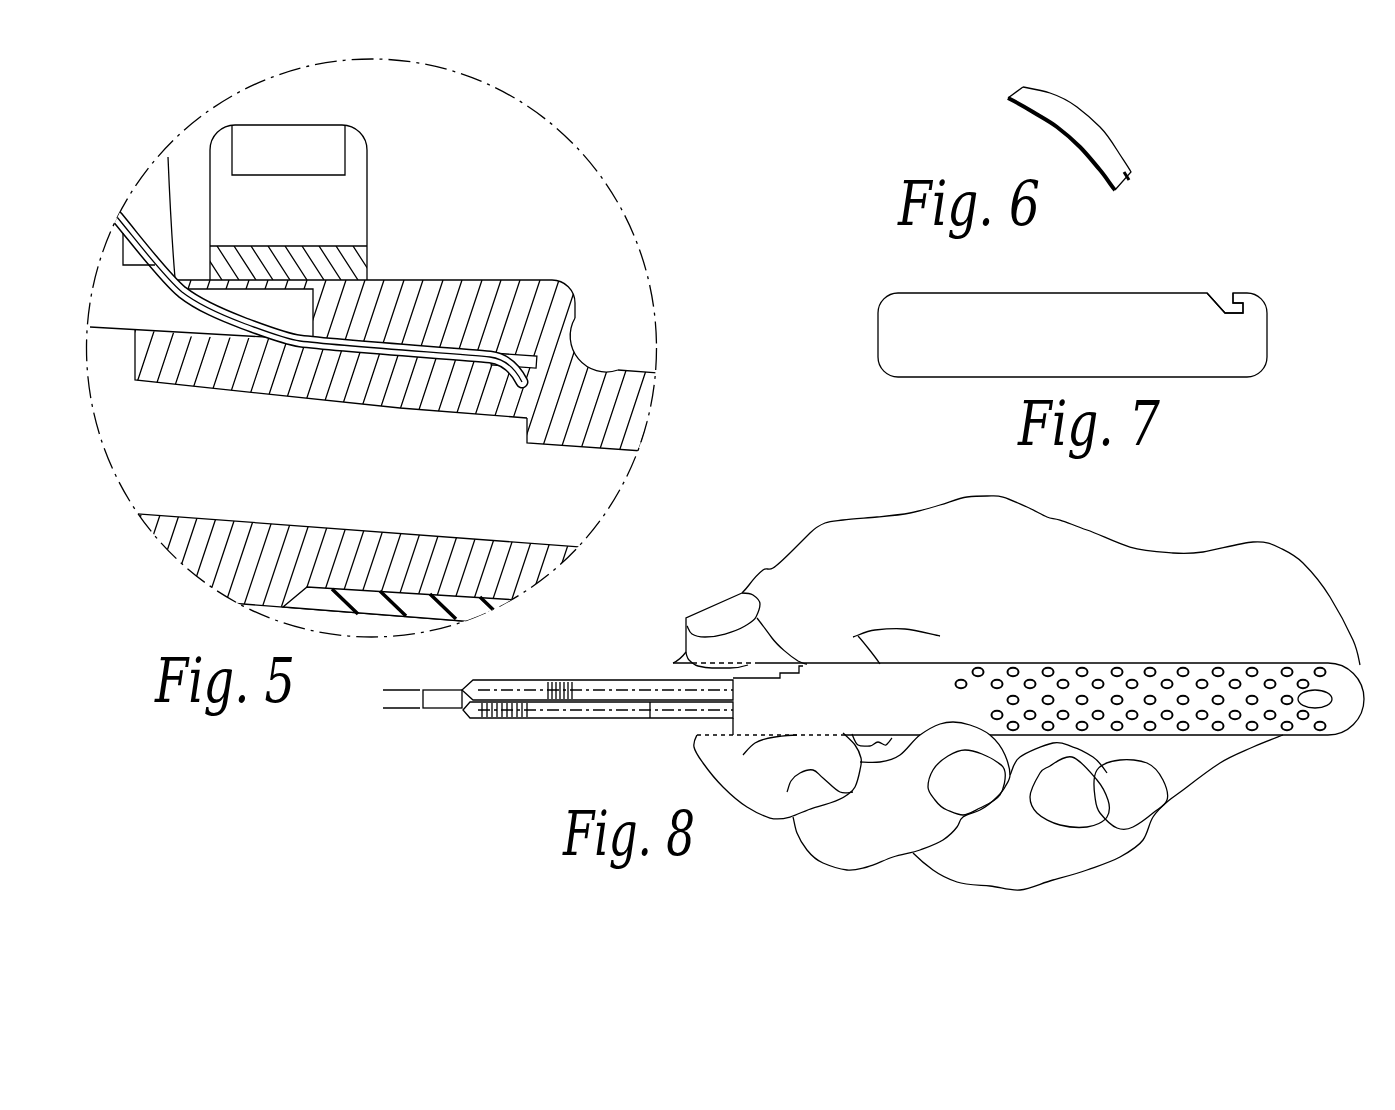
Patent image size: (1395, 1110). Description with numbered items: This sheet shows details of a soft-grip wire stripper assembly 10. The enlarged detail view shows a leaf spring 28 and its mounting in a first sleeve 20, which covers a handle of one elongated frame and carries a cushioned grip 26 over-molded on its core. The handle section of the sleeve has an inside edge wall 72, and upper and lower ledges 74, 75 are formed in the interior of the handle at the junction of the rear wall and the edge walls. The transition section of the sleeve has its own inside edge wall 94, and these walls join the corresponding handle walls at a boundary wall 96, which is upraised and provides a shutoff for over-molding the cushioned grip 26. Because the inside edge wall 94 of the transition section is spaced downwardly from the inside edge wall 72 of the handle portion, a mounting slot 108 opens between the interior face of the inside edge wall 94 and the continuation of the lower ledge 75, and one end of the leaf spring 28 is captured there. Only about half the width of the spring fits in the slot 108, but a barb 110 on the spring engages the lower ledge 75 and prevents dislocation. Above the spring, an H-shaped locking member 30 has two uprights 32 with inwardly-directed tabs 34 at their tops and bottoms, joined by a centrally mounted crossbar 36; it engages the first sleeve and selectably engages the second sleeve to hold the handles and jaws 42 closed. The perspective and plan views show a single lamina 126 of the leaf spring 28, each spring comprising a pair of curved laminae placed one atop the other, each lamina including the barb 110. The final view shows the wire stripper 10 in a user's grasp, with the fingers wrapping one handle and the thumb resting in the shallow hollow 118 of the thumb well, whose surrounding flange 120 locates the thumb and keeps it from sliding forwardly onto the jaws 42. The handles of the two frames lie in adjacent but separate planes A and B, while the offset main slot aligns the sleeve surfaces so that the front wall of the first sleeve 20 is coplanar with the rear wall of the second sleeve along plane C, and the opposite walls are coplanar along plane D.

In FIG. 8, the soft-grip wire stripper assembly 10 is at (642, 722).
In FIG. 5, the first sleeve 20 is at (640, 362).
In FIG. 5, the cushioned grip 26 is at (370, 607).
In FIG. 8, the cushioned grip 26 is at (1267, 722).
In FIG. 5, the leaf spring 28 is at (192, 305).
In FIG. 5, the H-shaped locking member 30 is at (372, 213).
In FIG. 5, the upright 32 is at (358, 180).
In FIG. 5, the tab 34 is at (322, 157).
In FIG. 5, the crossbar 36 is at (372, 262).
In FIG. 8, the jaws 42 is at (515, 680).
In FIG. 5, the inside edge wall 72 is at (617, 370).
In FIG. 5, the upper ledge 74 is at (313, 537).
In FIG. 5, the lower ledge 75 is at (365, 388).
In FIG. 5, the inside edge wall of transition section 94 is at (508, 280).
In FIG. 5, the boundary wall 96 is at (585, 320).
In FIG. 5, the mounting slot 108 is at (528, 352).
In FIG. 5, the barb 110 is at (478, 407).
In FIG. 6, the barb 110 is at (1133, 176).
In FIG. 7, the barb 110 is at (1231, 298).
In FIG. 8, the hollow 118 is at (668, 668).
In FIG. 8, the flange 120 is at (673, 660).
In FIG. 6, the lamina 126 is at (1072, 120).
In FIG. 7, the lamina 126 is at (960, 345).
In FIG. 8, the plane A is at (409, 688).
In FIG. 8, the plane B is at (392, 710).
In FIG. 8, the plane C is at (1200, 663).
In FIG. 8, the plane D is at (1223, 738).